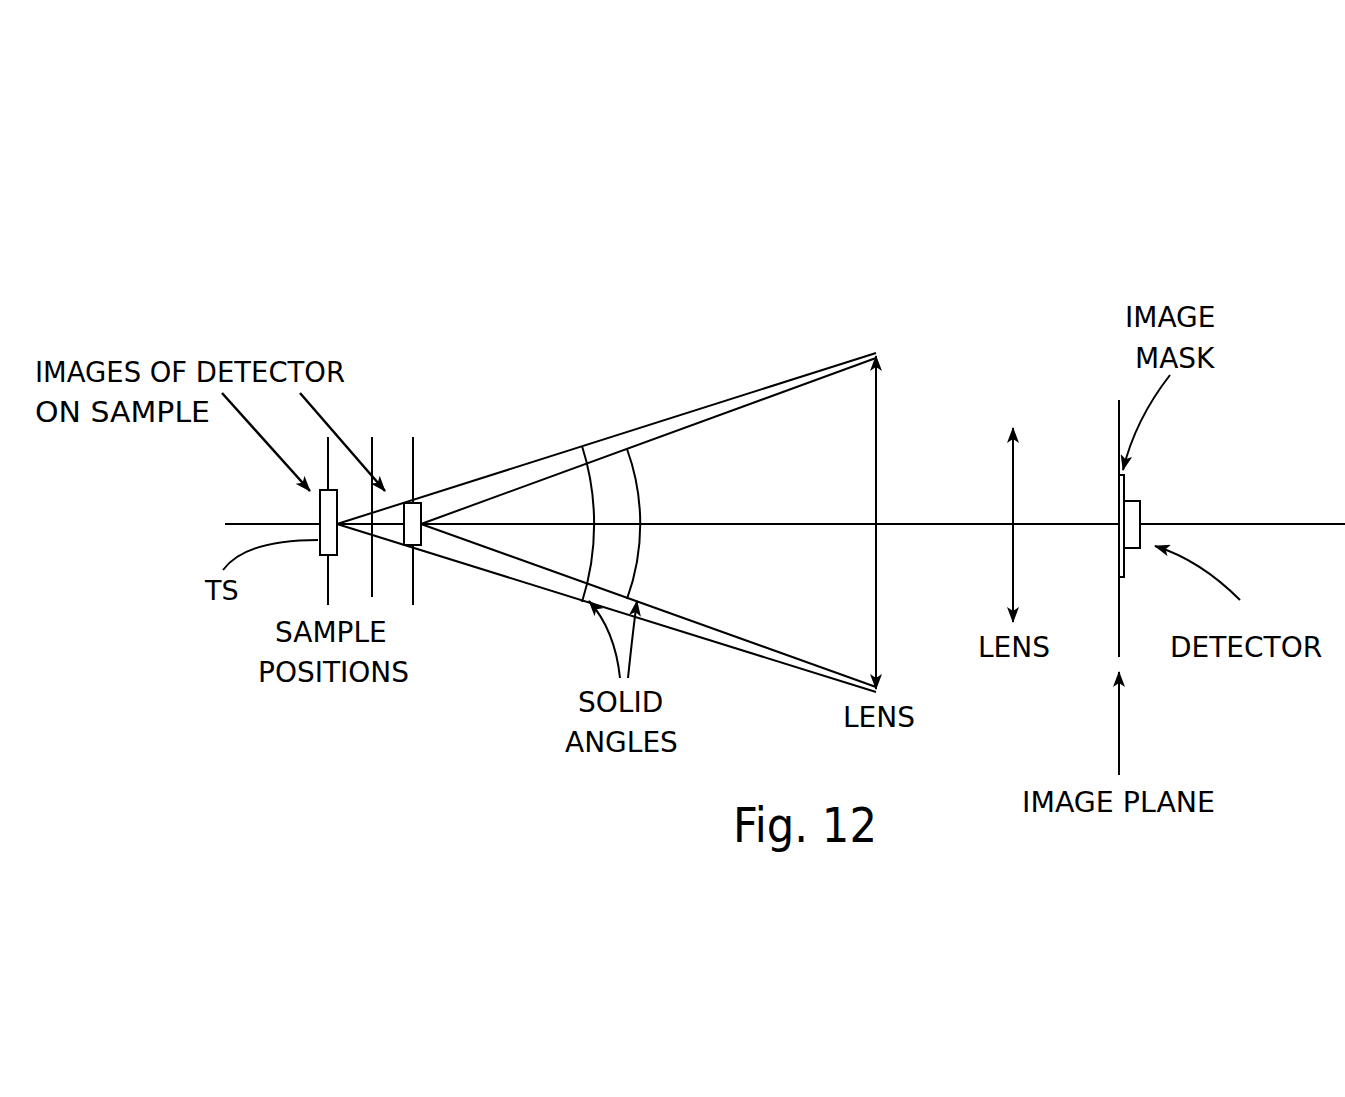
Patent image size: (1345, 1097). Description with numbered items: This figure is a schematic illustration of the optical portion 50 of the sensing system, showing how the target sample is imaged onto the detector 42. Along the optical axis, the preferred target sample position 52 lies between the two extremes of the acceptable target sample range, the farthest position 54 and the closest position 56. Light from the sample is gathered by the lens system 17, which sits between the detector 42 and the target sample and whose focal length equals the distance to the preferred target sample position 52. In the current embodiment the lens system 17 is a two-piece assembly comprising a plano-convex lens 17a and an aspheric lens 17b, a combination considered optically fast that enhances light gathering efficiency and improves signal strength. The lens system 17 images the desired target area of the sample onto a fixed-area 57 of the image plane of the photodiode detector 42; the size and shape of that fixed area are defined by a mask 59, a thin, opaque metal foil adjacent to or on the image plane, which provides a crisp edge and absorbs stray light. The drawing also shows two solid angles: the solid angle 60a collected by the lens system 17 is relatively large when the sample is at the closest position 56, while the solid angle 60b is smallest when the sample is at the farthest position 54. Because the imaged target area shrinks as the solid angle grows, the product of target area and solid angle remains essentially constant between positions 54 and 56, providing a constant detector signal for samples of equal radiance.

The optical portion 50 is at (792, 254).
The farthest position 54 is at (326, 588).
The preferred target sample position 52 is at (374, 595).
The closest position 56 is at (415, 602).
The solid angle 60a is at (640, 487).
The solid angle 60b is at (593, 487).
The lens system 17 is at (944, 515).
The plano-convex lens 17a is at (1012, 577).
The aspheric lens 17b is at (878, 415).
The fixed-area 57 is at (1117, 515).
The mask 59 is at (1118, 492).
The detector 42 is at (1140, 501).